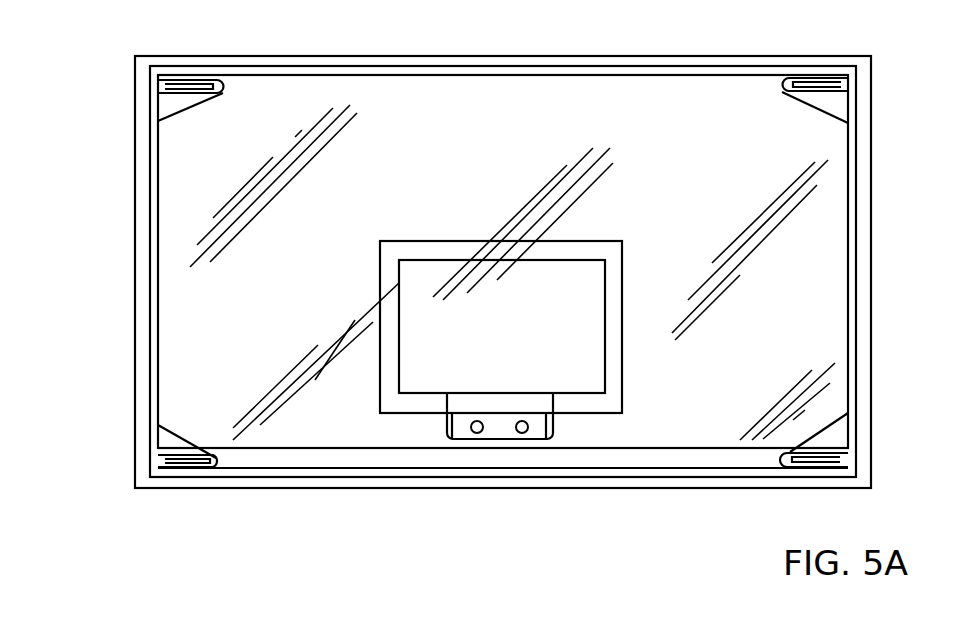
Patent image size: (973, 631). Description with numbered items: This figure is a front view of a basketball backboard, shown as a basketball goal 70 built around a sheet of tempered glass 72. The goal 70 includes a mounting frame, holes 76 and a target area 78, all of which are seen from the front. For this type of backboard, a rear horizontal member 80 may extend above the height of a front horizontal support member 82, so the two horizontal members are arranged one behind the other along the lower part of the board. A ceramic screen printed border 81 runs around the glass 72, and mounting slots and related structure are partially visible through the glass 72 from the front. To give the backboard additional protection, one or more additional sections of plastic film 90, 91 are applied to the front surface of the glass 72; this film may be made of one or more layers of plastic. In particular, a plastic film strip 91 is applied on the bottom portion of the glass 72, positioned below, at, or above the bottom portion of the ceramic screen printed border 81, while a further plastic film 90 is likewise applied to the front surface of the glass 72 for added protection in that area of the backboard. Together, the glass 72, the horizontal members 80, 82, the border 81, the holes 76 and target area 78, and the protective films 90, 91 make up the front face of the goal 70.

The basketball goal 70 is at (874, 232).
The tempered glass 72 is at (808, 185).
The holes 76 is at (478, 433).
The target area 78 is at (622, 305).
The rear horizontal member 80 is at (232, 461).
The ceramic screen printed border 81 is at (315, 80).
The front horizontal support member 82 is at (160, 82).
The plastic film 90 is at (460, 428).
The plastic film strip 91 is at (322, 450).